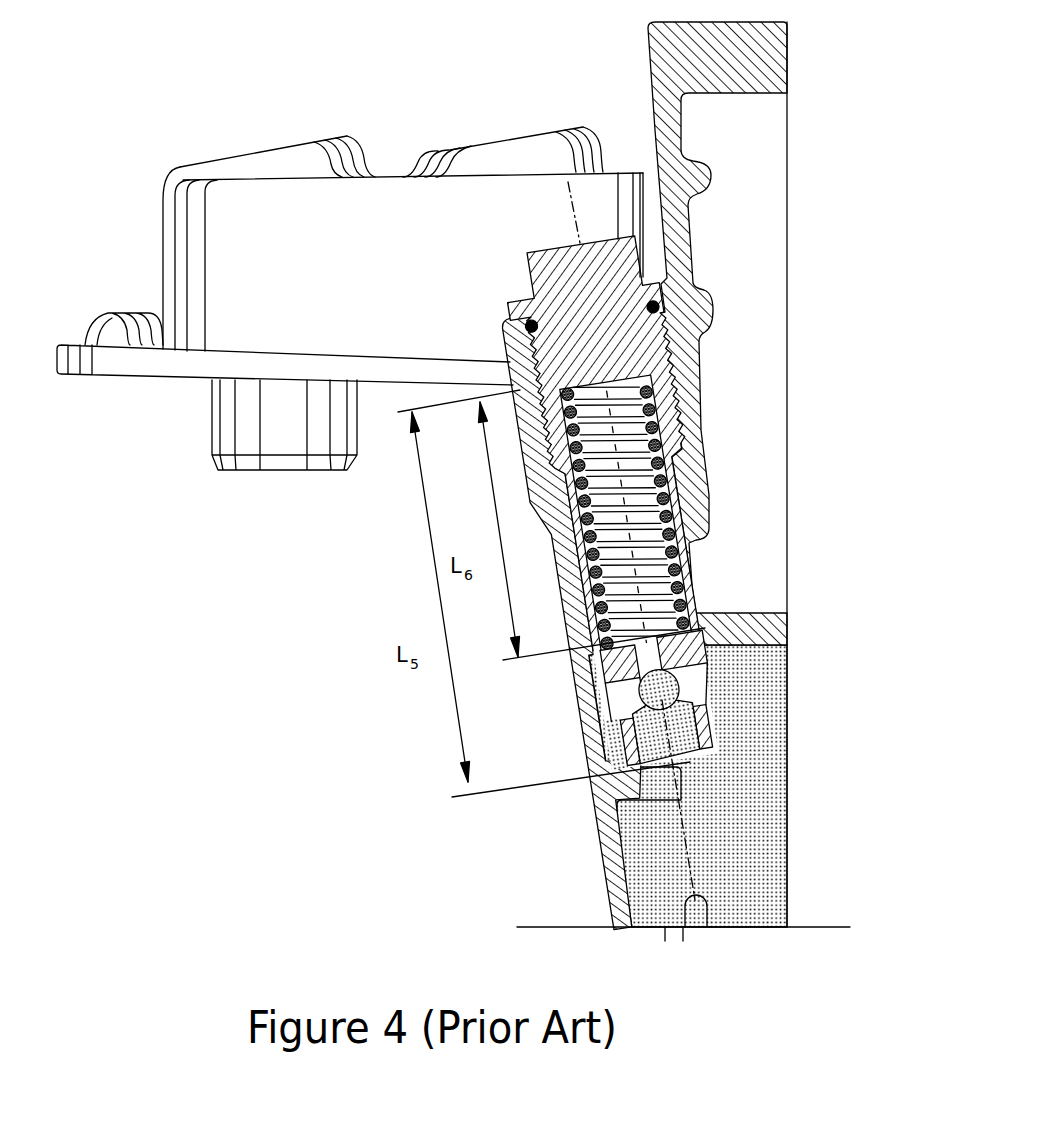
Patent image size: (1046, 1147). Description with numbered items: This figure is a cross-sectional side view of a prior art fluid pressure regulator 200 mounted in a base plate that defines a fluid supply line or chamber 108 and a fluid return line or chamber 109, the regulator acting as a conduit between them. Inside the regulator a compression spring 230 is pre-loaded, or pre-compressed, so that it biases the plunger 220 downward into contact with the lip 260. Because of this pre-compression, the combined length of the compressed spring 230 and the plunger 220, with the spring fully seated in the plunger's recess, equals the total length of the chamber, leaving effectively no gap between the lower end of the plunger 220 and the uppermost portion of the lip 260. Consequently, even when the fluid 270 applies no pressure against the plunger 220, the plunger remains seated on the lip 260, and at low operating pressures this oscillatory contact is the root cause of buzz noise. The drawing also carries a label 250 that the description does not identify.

The fluid supply line or chamber 108 is at (752, 816).
The fluid return line or chamber 109 is at (766, 515).
The prior art fluid pressure regulator 200 is at (680, 373).
The plunger 220 is at (735, 722).
The compression spring 230 is at (680, 456).
The check valve 250 is at (636, 449).
The lip 260 is at (640, 764).
The fluid 270 is at (760, 881).